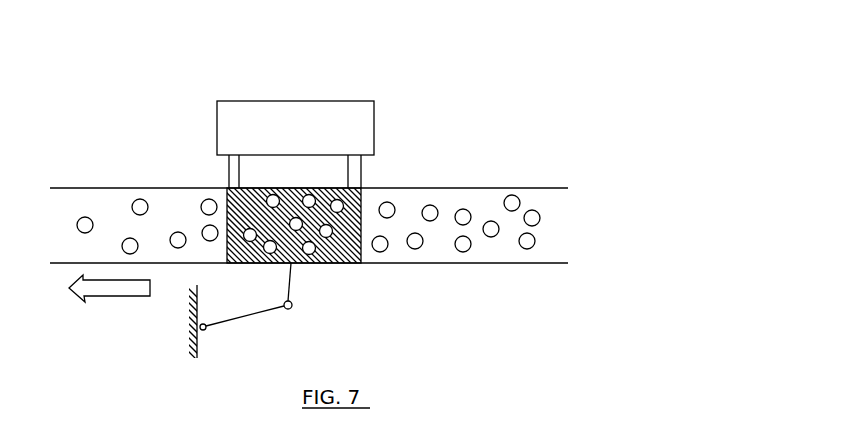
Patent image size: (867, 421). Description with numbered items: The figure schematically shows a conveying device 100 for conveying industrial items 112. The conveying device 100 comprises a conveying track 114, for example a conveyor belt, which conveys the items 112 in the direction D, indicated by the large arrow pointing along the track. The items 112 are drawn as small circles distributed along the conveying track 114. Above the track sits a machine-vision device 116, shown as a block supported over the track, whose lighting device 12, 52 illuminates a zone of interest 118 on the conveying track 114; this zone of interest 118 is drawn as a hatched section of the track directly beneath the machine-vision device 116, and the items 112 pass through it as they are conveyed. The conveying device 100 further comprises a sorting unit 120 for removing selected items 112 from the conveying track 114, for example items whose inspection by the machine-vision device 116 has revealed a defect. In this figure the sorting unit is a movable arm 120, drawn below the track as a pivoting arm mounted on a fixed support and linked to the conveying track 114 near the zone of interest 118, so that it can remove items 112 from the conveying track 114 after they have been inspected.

The conveying device 100 is at (309, 195).
The industrial items 112 is at (462, 252).
The conveying track 114 is at (123, 187).
The machine-vision device 116 is at (266, 108).
The zone of interest 118 is at (224, 192).
The sorting unit 120 is at (291, 302).
The lighting device 12 is at (266, 123).
The lighting device 52 is at (224, 100).
The conveying direction D is at (95, 297).